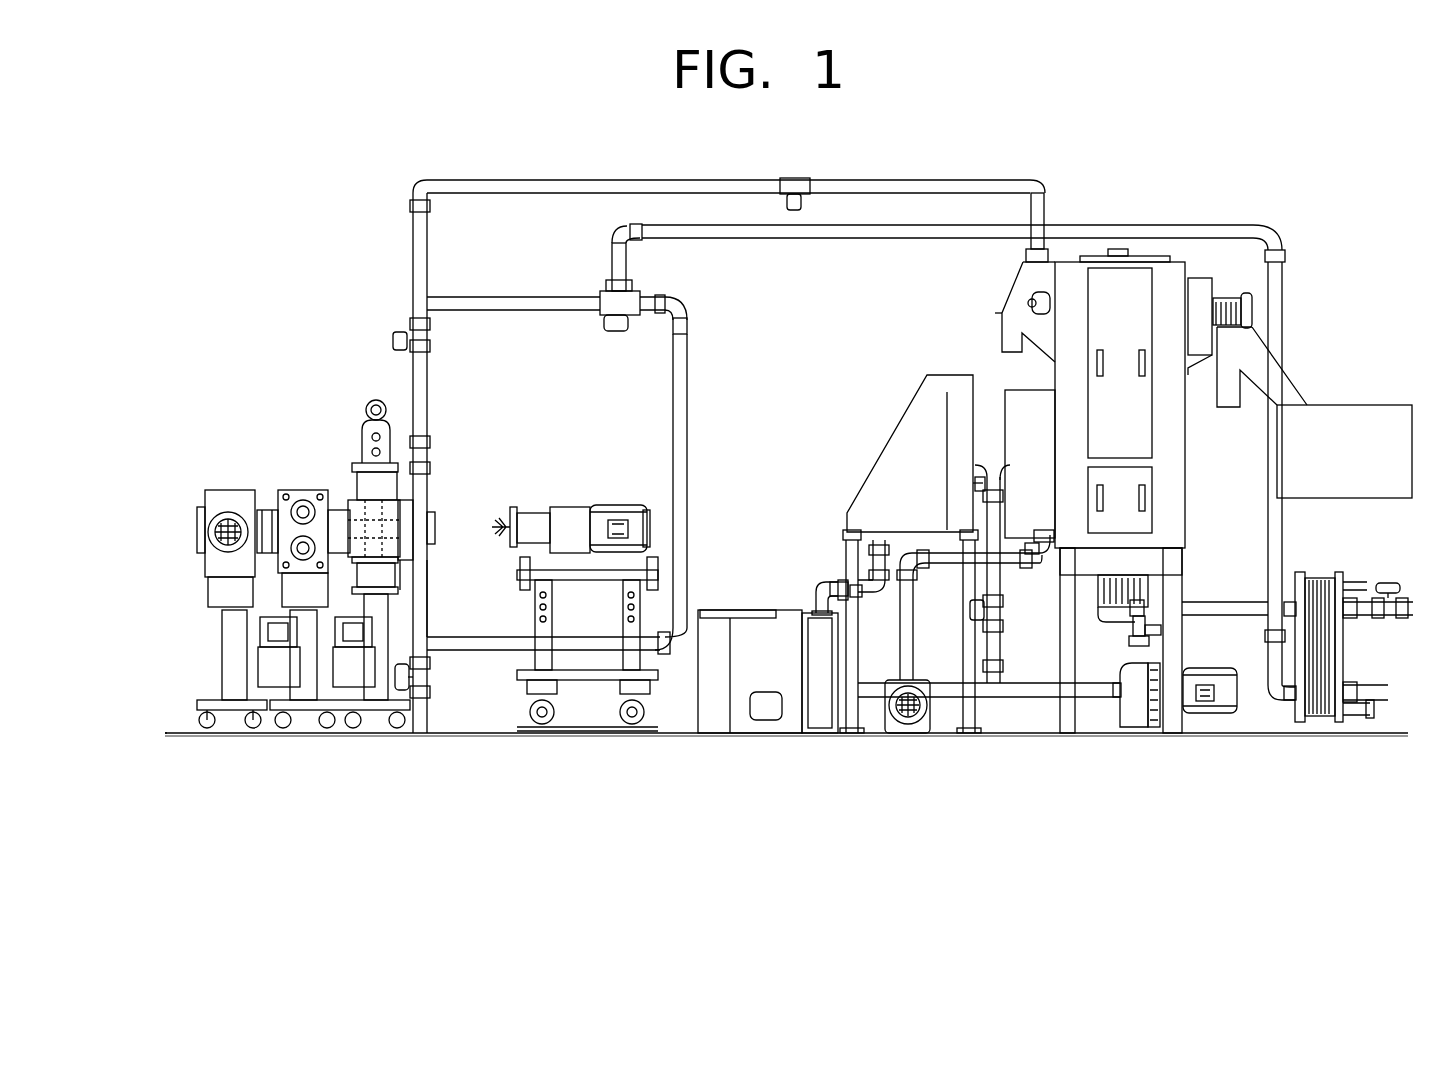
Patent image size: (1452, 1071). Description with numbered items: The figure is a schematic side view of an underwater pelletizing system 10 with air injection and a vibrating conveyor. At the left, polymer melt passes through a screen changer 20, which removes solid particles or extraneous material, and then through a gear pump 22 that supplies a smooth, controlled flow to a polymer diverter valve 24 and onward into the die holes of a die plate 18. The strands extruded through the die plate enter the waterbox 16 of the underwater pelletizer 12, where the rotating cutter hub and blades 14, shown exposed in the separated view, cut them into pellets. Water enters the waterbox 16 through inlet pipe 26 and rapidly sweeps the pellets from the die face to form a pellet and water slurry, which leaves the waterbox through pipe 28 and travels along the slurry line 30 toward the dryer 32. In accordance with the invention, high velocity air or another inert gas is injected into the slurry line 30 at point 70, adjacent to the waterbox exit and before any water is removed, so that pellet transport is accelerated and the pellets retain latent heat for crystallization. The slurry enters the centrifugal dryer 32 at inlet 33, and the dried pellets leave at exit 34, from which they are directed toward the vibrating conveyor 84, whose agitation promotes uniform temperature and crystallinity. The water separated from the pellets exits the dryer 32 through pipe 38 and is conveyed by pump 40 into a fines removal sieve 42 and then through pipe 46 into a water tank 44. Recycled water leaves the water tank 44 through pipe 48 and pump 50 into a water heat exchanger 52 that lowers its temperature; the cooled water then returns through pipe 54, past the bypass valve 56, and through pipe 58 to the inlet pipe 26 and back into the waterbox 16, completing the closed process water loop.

The underwater pelletizing system 10 is at (393, 230).
The underwater pelletizer 12 is at (568, 512).
The cutter hub and blades 14 is at (500, 515).
The waterbox 16 is at (420, 540).
The die plate 18 is at (402, 560).
The screen changer 20 is at (210, 547).
The gear pump 22 is at (302, 556).
The polymer diverter valve 24 is at (395, 527).
The inlet pipe 26 is at (418, 585).
The pipe 28 is at (428, 373).
The slurry line 30 is at (478, 185).
The dryer 32 is at (1103, 275).
The inlet 33 is at (1030, 263).
The dryer exit 34 is at (1290, 390).
The pipe 38 is at (948, 556).
The pump 40 is at (906, 718).
The fines removal sieve 42 is at (912, 425).
The water tank 44 is at (745, 718).
The pipe 46 is at (816, 598).
The pipe 48 is at (1020, 692).
The pump 50 is at (1128, 705).
The water heat exchanger 52 is at (1298, 718).
The pipe 54 is at (770, 240).
The bypass valve 56 is at (603, 295).
The pipe 58 is at (690, 428).
The air injection point 70 is at (415, 268).
The vibrating conveyor 84 is at (1360, 470).